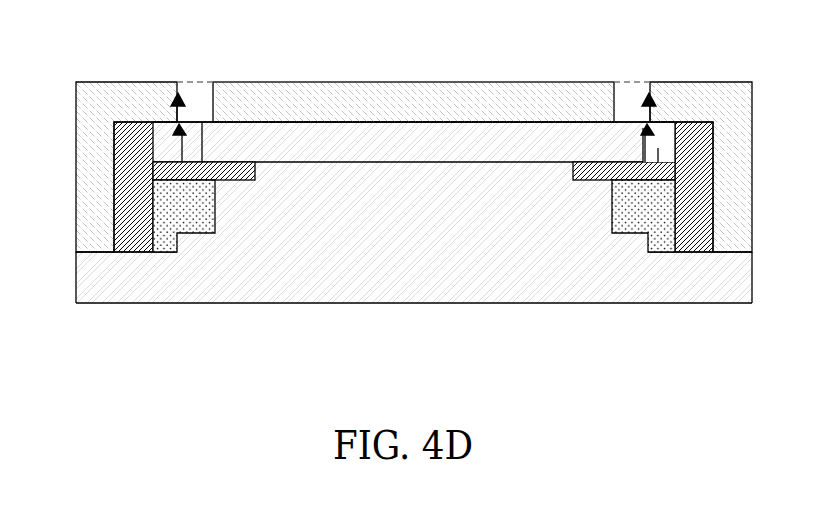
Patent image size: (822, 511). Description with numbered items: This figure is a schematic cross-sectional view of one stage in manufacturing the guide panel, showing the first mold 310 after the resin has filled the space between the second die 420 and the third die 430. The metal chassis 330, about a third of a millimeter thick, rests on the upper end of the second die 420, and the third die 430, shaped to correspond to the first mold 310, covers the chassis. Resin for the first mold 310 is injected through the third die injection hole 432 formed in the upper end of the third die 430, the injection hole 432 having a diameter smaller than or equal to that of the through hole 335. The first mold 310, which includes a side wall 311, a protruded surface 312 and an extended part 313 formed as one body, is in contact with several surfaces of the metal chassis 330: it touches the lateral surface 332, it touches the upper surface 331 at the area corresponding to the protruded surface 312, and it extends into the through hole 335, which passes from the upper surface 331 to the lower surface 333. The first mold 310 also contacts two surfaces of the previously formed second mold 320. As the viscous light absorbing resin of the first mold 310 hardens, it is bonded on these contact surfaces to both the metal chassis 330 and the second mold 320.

The first mold 310 is at (410, 253).
The side wall 311 is at (135, 228).
The protruded surface 312 is at (181, 168).
The extended part 313 is at (203, 133).
The second mold 320 is at (167, 215).
The metal chassis 330 is at (167, 152).
The upper surface 331 is at (496, 163).
The lateral surface 332 is at (674, 158).
The lower surface 333 is at (460, 121).
The through hole 335 is at (174, 131).
The second die 420 is at (92, 275).
The third die 430 is at (93, 100).
The third die injection hole 432 is at (172, 104).